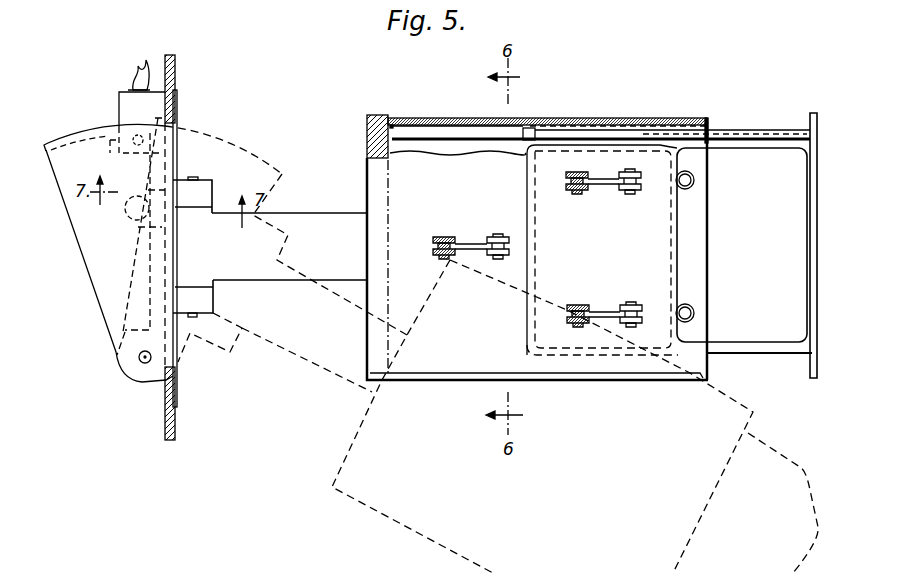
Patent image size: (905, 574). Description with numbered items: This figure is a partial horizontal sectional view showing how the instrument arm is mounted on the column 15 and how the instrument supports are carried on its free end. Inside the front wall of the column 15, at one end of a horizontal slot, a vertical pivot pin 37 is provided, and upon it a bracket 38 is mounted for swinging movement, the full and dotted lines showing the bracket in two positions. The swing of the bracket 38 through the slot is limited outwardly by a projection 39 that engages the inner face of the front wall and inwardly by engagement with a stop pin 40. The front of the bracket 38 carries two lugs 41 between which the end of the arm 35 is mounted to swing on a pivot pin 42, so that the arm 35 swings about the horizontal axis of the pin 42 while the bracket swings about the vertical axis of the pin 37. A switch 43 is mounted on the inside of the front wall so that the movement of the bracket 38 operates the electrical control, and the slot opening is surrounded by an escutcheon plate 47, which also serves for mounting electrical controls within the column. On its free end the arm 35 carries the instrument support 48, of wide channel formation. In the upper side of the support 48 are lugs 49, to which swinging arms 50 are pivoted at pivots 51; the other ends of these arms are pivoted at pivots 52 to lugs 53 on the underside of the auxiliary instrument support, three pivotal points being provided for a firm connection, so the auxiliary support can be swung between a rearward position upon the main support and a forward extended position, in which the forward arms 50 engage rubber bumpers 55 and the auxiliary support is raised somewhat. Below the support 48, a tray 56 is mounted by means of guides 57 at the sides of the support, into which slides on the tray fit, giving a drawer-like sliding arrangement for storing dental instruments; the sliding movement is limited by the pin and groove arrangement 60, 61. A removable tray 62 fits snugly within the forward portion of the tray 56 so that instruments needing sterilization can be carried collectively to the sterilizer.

The column 15 is at (177, 423).
The arm 35 is at (313, 222).
The pivot pin 37 is at (143, 368).
The bracket 38 is at (112, 312).
The projection 39 is at (50, 140).
The stop pin 40 is at (135, 220).
The lugs 41 is at (205, 195).
The pivot pin 42 is at (192, 178).
The switch 43 is at (128, 102).
The escutcheon plate 47 is at (178, 113).
The instrument support 48 is at (370, 537).
The lugs 49 is at (503, 237).
The swinging arms 50 is at (475, 247).
The pivots 51 is at (502, 258).
The pivots 52 is at (450, 238).
The lugs 53 is at (432, 243).
The rubber bumpers 55 is at (695, 180).
The tray 56 is at (747, 353).
The guides 57 is at (450, 120).
The pin 60 is at (717, 122).
The groove 61 is at (760, 130).
The removable tray 62 is at (780, 333).